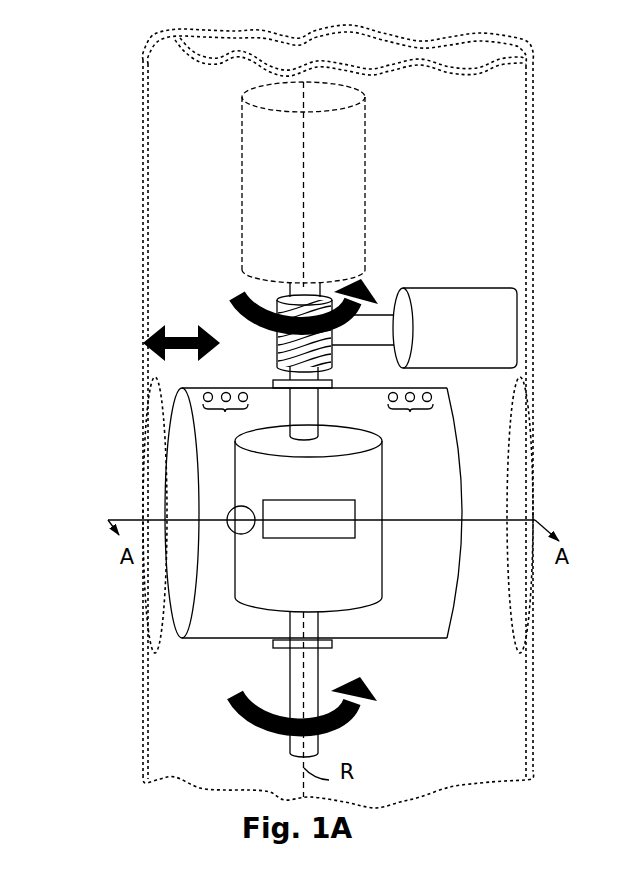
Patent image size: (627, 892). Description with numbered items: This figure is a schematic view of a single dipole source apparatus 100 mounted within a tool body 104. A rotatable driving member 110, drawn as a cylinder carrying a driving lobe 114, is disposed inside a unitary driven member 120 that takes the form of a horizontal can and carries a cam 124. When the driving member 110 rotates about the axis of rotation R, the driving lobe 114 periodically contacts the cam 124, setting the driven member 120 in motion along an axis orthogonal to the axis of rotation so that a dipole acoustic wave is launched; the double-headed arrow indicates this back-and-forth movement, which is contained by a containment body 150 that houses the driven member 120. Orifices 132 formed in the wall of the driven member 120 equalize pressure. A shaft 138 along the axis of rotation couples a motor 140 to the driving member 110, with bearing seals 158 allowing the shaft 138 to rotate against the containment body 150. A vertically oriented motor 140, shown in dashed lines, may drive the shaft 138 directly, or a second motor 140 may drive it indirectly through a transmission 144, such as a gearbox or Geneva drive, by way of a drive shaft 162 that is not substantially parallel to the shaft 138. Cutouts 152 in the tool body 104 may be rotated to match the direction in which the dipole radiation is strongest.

The single dipole source apparatus 100 is at (431, 692).
The tool body 104 is at (535, 692).
The rotatable driving member 110 is at (385, 481).
The driving lobe 114 is at (245, 506).
The unitary driven member 120 is at (464, 550).
The cam 124 is at (310, 538).
The orifices 132 is at (318, 414).
The shaft 138 is at (323, 413).
The motor 140 is at (366, 196).
The transmission 144 is at (277, 343).
The containment body 150 is at (216, 672).
The cutouts 152 is at (513, 478).
The bearing seals 158 is at (333, 384).
The drive shaft 162 is at (381, 315).